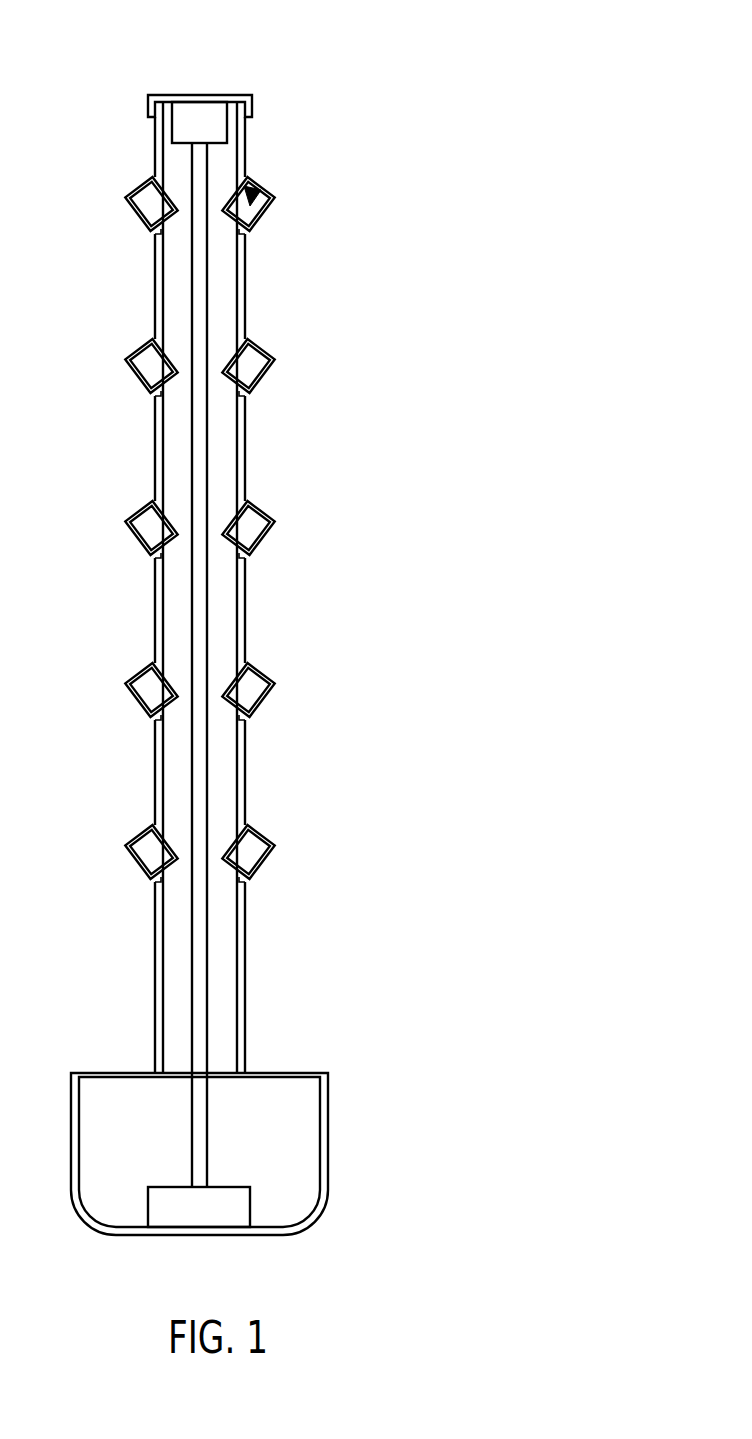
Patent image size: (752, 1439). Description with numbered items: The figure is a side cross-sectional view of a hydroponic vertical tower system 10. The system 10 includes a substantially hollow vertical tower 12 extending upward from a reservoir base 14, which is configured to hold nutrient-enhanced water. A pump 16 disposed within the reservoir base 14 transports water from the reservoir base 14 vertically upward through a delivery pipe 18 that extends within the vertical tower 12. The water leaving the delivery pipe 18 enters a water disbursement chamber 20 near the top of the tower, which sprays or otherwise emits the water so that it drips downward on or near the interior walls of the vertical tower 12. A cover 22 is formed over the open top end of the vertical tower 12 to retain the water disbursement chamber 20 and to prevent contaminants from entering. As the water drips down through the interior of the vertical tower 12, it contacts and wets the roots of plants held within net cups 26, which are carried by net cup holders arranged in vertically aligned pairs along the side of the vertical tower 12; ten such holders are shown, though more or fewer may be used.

The hydroponic vertical tower system 10 is at (368, 78).
The vertical tower 12 is at (238, 310).
The reservoir base 14 is at (323, 1133).
The pump 16 is at (170, 1212).
The delivery pipe 18 is at (200, 438).
The water disbursement chamber 20 is at (195, 118).
The cover 22 is at (158, 95).
The net cup 26 is at (255, 185).